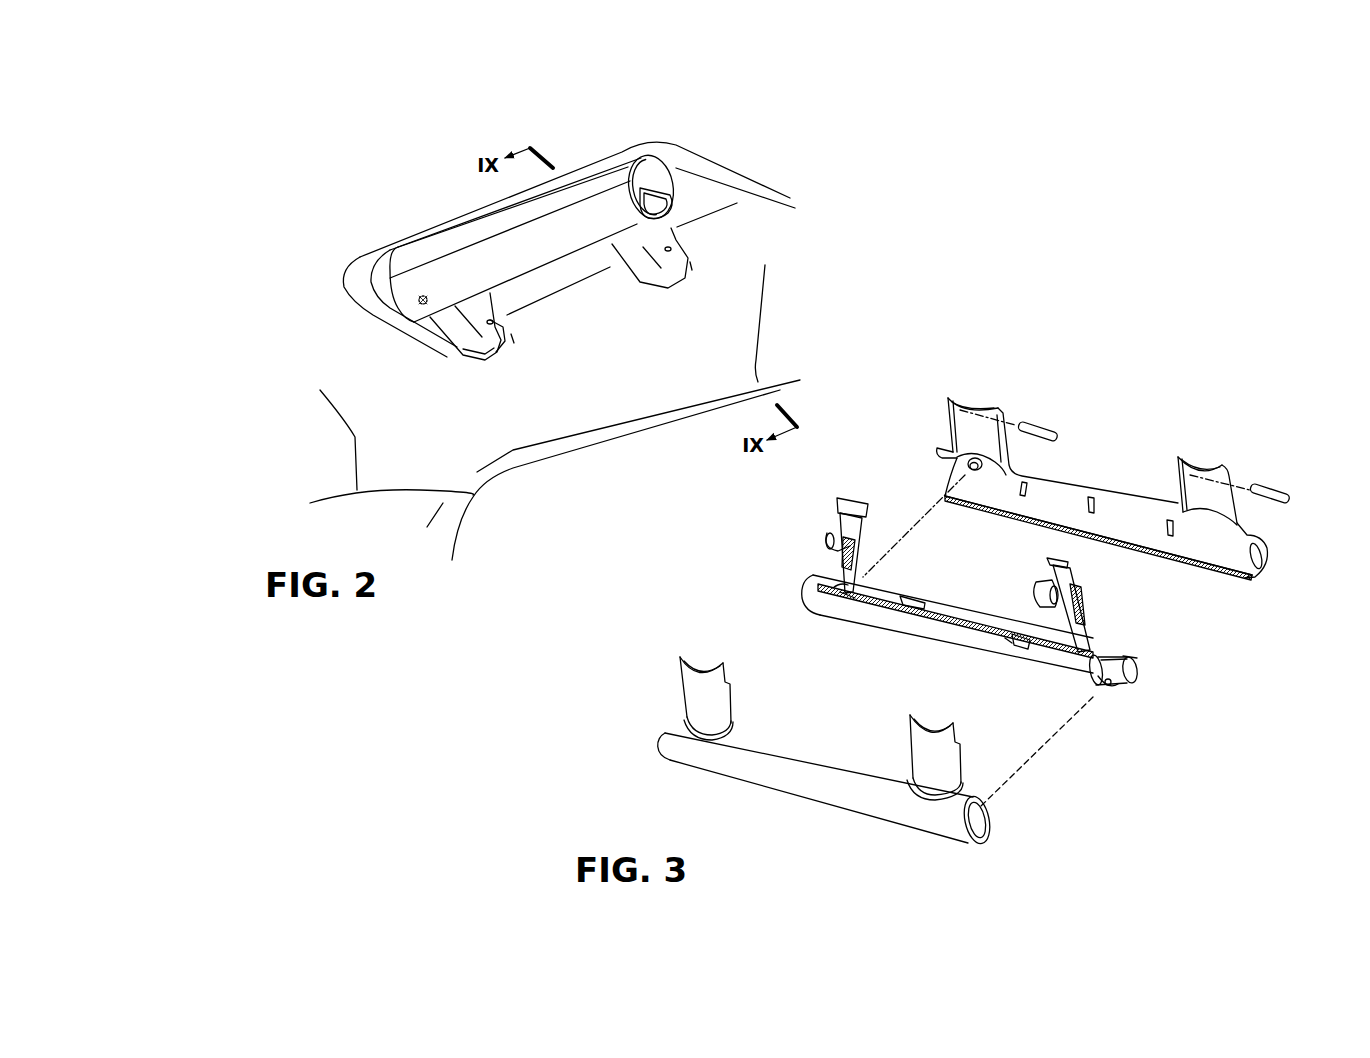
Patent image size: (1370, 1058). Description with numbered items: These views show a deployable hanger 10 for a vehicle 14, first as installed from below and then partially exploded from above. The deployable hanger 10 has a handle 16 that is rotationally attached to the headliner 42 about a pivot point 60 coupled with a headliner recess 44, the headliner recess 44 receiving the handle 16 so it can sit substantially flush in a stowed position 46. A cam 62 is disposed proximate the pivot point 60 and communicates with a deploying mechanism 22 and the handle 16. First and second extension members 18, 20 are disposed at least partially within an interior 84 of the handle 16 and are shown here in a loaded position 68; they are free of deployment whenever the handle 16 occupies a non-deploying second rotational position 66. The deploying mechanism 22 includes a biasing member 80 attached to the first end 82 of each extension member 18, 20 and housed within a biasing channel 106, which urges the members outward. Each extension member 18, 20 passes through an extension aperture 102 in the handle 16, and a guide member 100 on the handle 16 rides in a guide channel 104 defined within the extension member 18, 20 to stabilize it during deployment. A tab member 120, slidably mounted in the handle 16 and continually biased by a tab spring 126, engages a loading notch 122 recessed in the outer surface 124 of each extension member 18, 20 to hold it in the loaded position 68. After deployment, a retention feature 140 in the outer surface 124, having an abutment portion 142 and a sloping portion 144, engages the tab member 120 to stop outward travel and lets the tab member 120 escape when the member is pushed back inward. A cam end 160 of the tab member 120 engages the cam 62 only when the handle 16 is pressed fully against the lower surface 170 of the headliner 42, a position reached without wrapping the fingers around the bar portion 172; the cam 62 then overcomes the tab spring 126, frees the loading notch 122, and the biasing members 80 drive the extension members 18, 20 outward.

In FIG. 2, the deployable hanger 10 is at (661, 128).
In FIG. 3, the deployable hanger 10 is at (1178, 677).
In FIG. 2, the vehicle 14 is at (343, 247).
In FIG. 2, the handle 16 is at (452, 329).
In FIG. 3, the handle 16 is at (697, 701).
In FIG. 2, the first extension member 18 is at (661, 200).
In FIG. 3, the first extension member 18 is at (1137, 668).
In FIG. 3, the second extension member 20 is at (862, 616).
In FIG. 3, the deploying mechanism 22 is at (1102, 610).
In FIG. 2, the headliner 42 is at (402, 245).
In FIG. 2, the headliner recess 44 is at (388, 299).
In FIG. 2, the stowed position 46 is at (588, 152).
In FIG. 2, the pivot point 60 is at (494, 343).
In FIG. 3, the pivot point 60 is at (1040, 430).
In FIG. 3, the cam 62 is at (1040, 594).
In FIG. 2, the second rotational position 66 is at (450, 229).
In FIG. 2, the loaded position 68 is at (677, 166).
In FIG. 3, the loaded position 68 is at (797, 580).
In FIG. 3, the biasing member 80 is at (1110, 684).
In FIG. 3, the first end 82 is at (1100, 668).
In FIG. 3, the interior 84 is at (1067, 510).
In FIG. 2, the guide member 100 is at (420, 303).
In FIG. 3, the guide member 100 is at (1112, 684).
In FIG. 2, the extension aperture 102 is at (675, 218).
In FIG. 3, the extension aperture 102 is at (1268, 545).
In FIG. 3, the guide channel 104 is at (1133, 657).
In FIG. 3, the biasing channel 106 is at (1098, 678).
In FIG. 3, the tab member 120 is at (863, 577).
In FIG. 3, the loading notch 122 is at (833, 609).
In FIG. 3, the outer surface 124 is at (923, 618).
In FIG. 3, the tab spring 126 is at (860, 543).
In FIG. 3, the retention feature 140 is at (1012, 646).
In FIG. 3, the abutment portion 142 is at (907, 600).
In FIG. 3, the sloping portion 144 is at (1027, 645).
In FIG. 3, the cam end 160 is at (843, 500).
In FIG. 2, the lower surface 170 is at (606, 343).
In FIG. 2, the bar portion 172 is at (503, 247).
In FIG. 3, the bar portion 172 is at (747, 767).